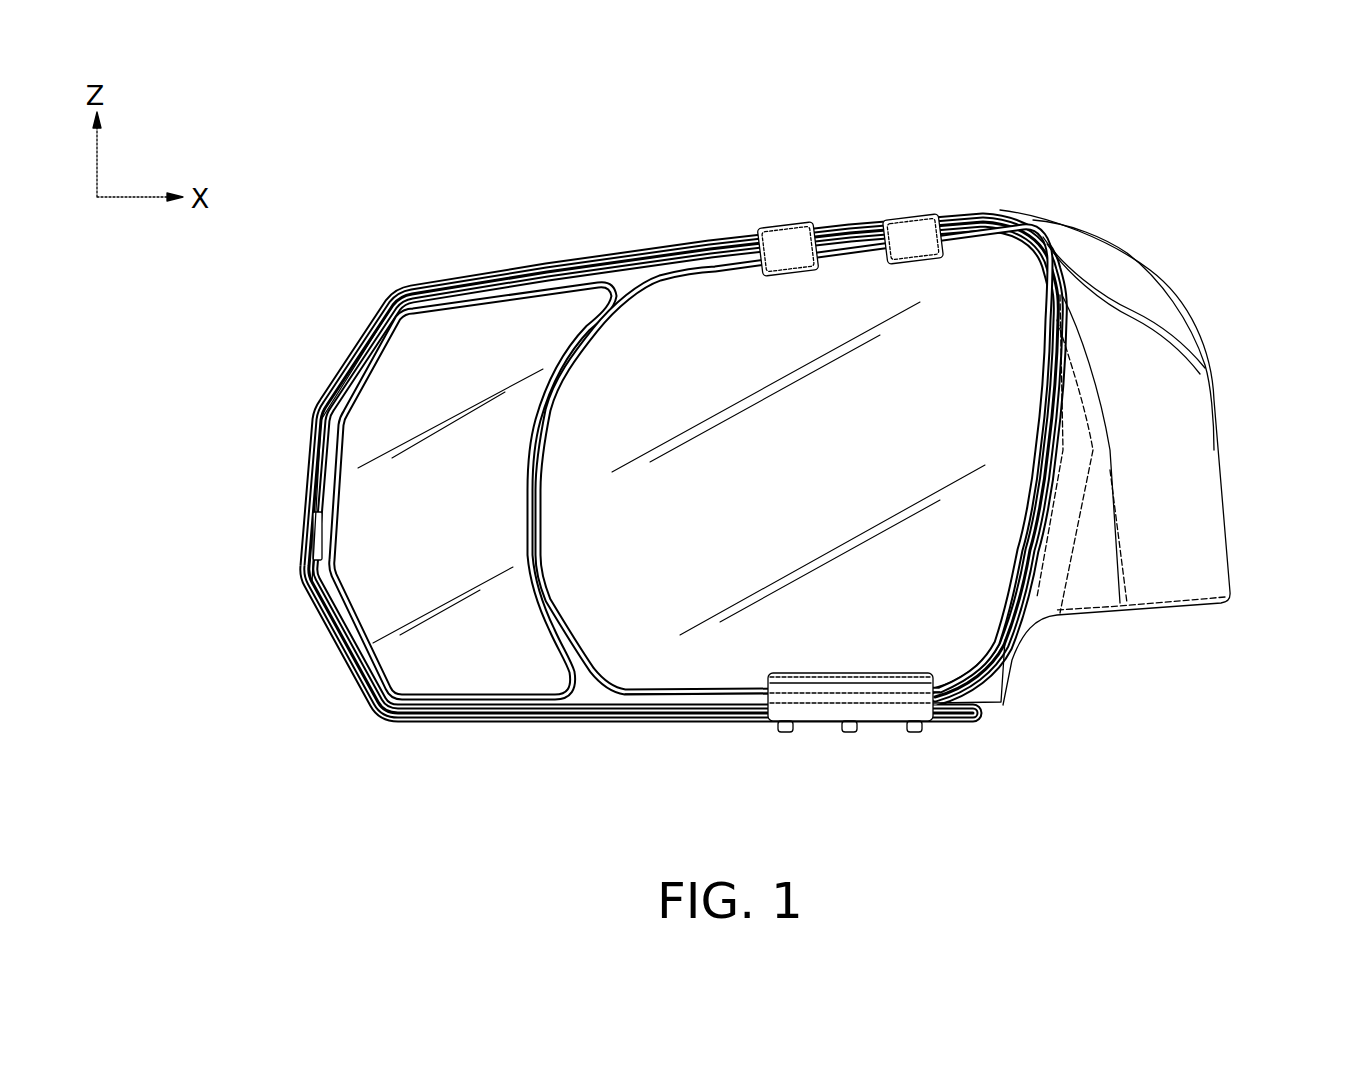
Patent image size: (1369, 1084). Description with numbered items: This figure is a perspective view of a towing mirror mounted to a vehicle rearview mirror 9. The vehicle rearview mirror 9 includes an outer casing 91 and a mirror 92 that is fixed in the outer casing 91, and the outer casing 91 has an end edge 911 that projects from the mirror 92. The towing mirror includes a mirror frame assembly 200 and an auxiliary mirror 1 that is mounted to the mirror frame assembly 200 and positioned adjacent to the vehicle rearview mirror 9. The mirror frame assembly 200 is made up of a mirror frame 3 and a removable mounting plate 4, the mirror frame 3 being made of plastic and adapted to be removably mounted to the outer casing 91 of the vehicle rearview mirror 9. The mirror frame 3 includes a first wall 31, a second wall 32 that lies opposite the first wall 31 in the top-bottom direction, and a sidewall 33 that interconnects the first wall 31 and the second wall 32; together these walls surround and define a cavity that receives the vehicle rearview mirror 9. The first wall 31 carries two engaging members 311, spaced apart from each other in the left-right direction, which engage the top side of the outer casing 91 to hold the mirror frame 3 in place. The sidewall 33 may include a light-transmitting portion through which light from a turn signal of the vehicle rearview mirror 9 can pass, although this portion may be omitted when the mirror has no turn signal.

The auxiliary mirror 1 is at (478, 327).
The mirror frame 3 is at (630, 492).
The first wall 31 is at (562, 258).
The second wall 32 is at (527, 725).
The sidewall 33 is at (305, 473).
The engaging member 311 is at (790, 252).
The mirror 92 is at (695, 325).
The end edge 911 is at (692, 690).
The vehicle rearview mirror 9 is at (1126, 464).
The outer casing 91 is at (1087, 596).
The removable mounting plate 4 is at (836, 705).
The mirror frame assembly 200 is at (937, 761).